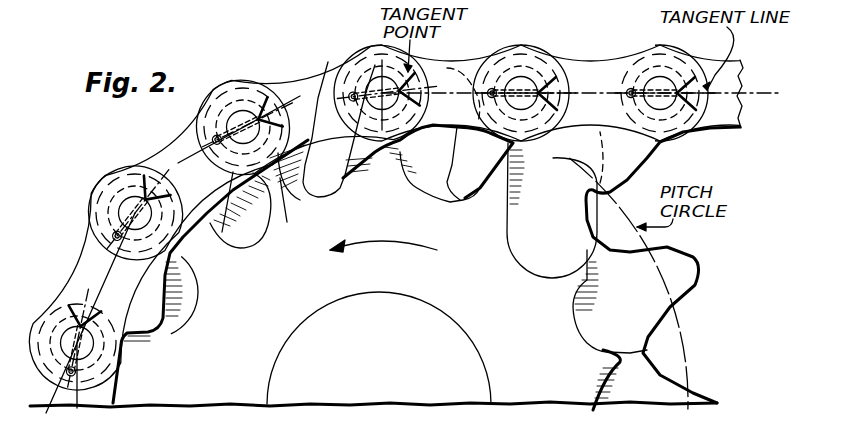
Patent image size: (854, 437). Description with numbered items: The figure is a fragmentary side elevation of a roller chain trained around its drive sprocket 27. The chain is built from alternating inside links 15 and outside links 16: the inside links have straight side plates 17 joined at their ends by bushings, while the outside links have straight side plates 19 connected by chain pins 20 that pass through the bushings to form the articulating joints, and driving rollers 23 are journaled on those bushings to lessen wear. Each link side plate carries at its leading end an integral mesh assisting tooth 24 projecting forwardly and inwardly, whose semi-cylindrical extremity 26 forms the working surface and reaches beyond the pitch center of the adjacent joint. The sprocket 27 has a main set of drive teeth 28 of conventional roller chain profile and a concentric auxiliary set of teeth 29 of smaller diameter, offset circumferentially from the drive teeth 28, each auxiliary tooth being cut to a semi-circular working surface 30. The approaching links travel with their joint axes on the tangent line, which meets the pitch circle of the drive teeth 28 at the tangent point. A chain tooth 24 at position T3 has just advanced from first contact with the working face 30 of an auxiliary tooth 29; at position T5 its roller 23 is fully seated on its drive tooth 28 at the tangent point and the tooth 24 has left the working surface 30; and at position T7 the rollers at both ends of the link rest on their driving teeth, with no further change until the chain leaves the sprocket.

The inside links 15 is at (335, 64).
The outside links 16 is at (123, 168).
The side plates 17 is at (585, 60).
The side plates 19 is at (195, 123).
The chain pins 20 is at (243, 110).
The driving rollers 23 is at (400, 88).
The mesh assisting tooth 24 is at (228, 226).
The semi-cylindrical extremities 26 is at (318, 190).
The sprocket 27 is at (399, 348).
The drive teeth 28 is at (687, 273).
The auxiliary teeth 29 is at (587, 258).
The working surfaces 30 is at (237, 241).
The tooth position T3 is at (510, 202).
The tooth position T5 is at (340, 172).
The tooth position T7 is at (213, 240).